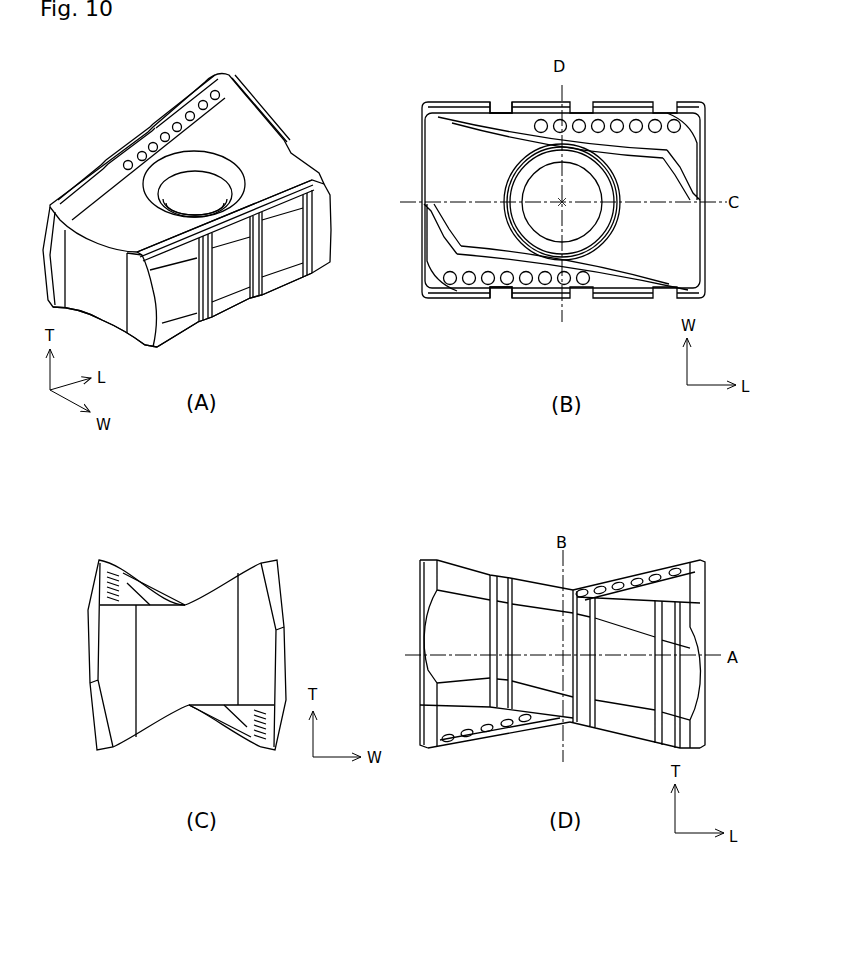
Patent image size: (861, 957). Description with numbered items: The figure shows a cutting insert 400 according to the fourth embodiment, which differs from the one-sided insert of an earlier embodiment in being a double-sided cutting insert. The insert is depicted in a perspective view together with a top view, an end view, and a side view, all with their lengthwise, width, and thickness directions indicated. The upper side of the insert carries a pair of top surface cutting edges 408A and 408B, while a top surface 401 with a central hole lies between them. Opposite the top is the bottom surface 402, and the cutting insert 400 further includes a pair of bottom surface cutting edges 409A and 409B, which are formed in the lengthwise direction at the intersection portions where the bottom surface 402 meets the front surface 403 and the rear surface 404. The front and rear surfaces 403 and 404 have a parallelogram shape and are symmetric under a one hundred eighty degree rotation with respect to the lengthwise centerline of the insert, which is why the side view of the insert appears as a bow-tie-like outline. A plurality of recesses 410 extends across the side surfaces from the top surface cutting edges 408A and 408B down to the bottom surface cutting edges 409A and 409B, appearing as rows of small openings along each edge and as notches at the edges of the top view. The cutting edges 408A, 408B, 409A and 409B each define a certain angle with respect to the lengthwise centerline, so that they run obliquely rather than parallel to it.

The cutting insert 400 is at (79, 76).
The upper surface (rake face) 401 is at (283, 158).
The bottom surface 402 is at (175, 335).
The front surface 403 is at (280, 272).
The rear surface 404 is at (114, 157).
The top surface cutting edge 408A is at (302, 198).
The top surface cutting edge 408B is at (170, 110).
The bottom surface cutting edge 409A is at (228, 320).
The bottom surface cutting edge 409B is at (465, 740).
The recesses 410 is at (146, 131).